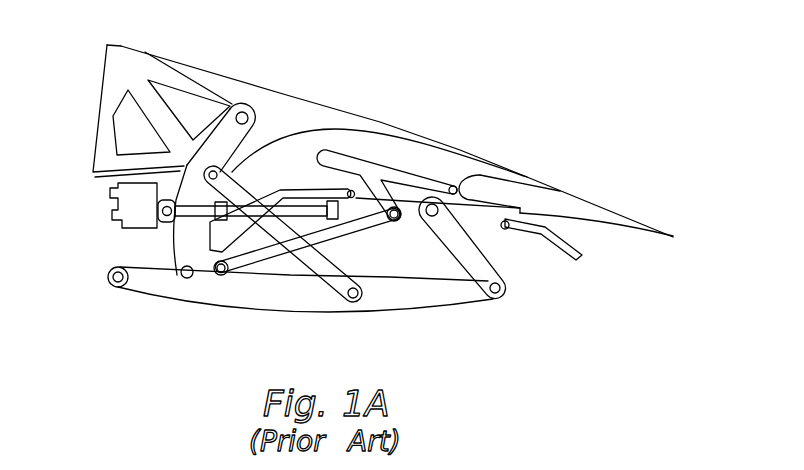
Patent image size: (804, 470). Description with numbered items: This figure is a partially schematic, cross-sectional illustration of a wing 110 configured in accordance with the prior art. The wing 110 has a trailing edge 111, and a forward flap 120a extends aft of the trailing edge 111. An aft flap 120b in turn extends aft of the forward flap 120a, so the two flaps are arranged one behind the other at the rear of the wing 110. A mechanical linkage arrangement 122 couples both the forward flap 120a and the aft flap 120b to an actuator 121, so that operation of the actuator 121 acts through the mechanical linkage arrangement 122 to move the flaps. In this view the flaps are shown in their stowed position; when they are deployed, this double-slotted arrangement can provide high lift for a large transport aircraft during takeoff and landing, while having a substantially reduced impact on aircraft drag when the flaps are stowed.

The wing 110 is at (118, 43).
The trailing edge 111 is at (315, 103).
The forward flap 120a is at (424, 160).
The aft flap 120b is at (612, 213).
The actuator 121 is at (98, 211).
The mechanical linkage arrangement 122 is at (553, 283).